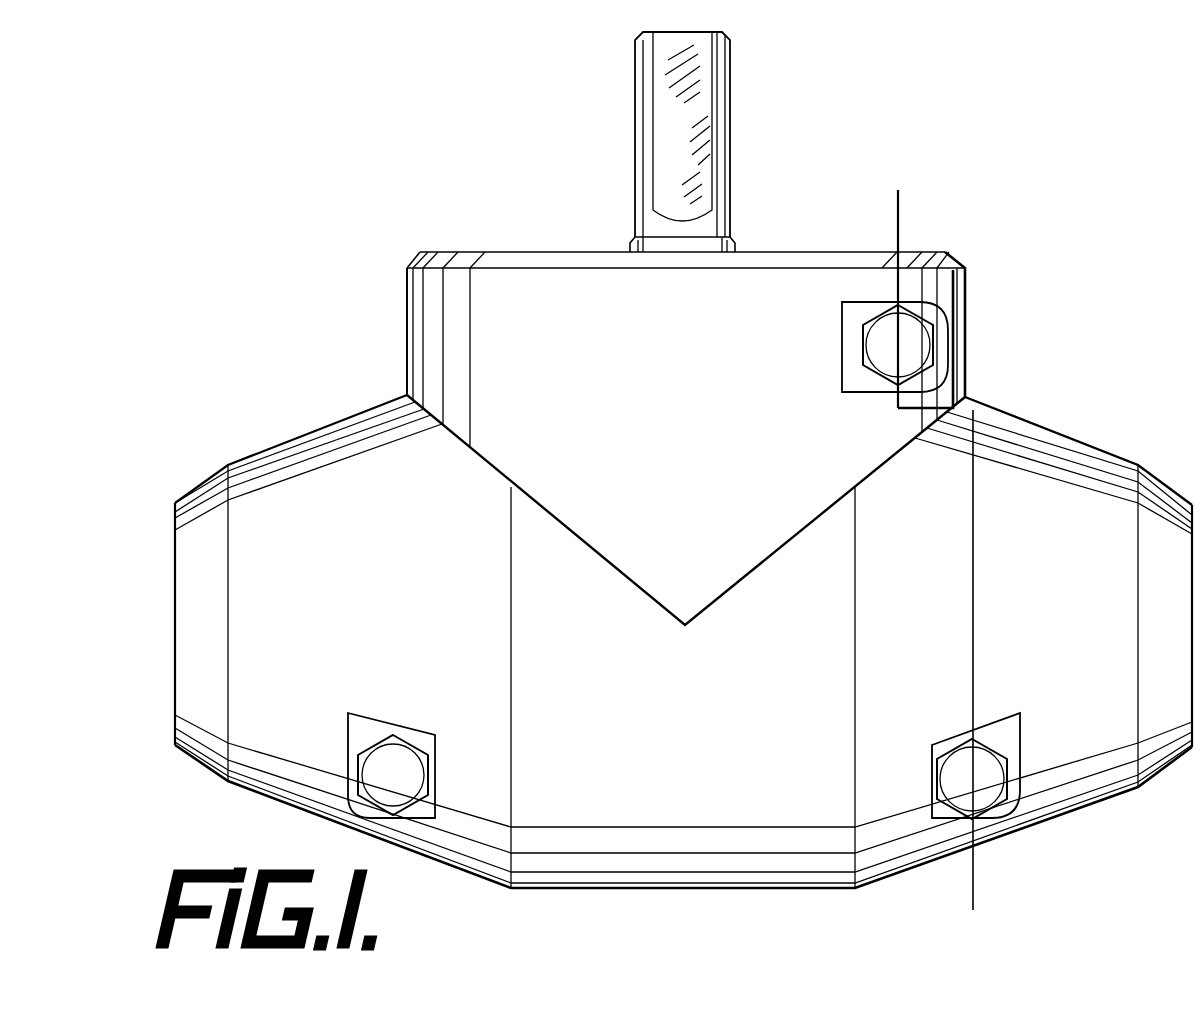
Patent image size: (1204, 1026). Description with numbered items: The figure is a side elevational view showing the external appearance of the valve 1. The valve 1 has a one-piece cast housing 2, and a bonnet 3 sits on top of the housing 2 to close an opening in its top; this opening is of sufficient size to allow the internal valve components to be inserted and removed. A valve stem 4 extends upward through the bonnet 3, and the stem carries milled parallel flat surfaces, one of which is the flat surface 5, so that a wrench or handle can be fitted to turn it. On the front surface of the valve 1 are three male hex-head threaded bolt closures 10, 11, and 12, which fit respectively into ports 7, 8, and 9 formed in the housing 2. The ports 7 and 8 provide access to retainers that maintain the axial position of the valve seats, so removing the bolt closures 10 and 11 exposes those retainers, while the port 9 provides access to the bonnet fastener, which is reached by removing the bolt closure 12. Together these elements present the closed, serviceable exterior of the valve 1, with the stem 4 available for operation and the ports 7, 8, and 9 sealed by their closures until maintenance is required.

The valve 1 is at (1100, 372).
The one-piece cast housing 2 is at (322, 507).
The bonnet 3 is at (757, 298).
The valve stem 4 is at (730, 127).
The milled parallel flat surface 5 is at (695, 97).
The port 7 is at (993, 802).
The port 8 is at (370, 803).
The port 9 is at (922, 306).
The male hex-head threaded bolt closure 10 is at (993, 777).
The male hex-head threaded bolt closure 11 is at (397, 788).
The male hex-head threaded bolt closure 12 is at (913, 345).